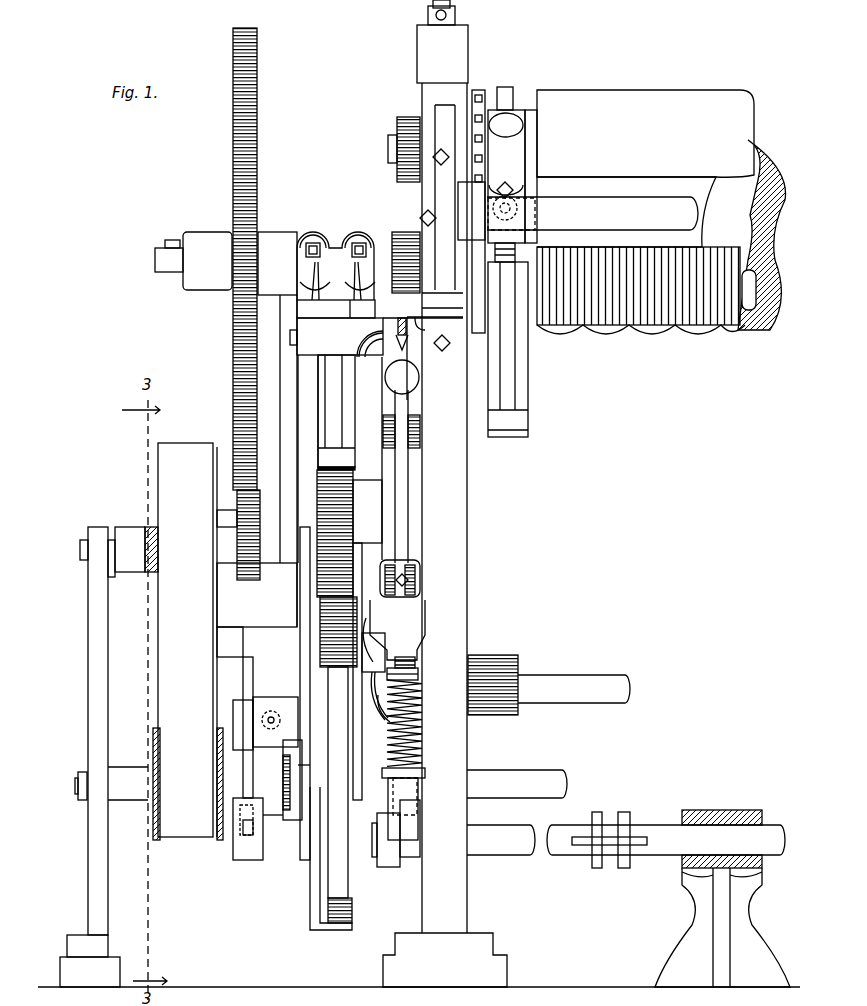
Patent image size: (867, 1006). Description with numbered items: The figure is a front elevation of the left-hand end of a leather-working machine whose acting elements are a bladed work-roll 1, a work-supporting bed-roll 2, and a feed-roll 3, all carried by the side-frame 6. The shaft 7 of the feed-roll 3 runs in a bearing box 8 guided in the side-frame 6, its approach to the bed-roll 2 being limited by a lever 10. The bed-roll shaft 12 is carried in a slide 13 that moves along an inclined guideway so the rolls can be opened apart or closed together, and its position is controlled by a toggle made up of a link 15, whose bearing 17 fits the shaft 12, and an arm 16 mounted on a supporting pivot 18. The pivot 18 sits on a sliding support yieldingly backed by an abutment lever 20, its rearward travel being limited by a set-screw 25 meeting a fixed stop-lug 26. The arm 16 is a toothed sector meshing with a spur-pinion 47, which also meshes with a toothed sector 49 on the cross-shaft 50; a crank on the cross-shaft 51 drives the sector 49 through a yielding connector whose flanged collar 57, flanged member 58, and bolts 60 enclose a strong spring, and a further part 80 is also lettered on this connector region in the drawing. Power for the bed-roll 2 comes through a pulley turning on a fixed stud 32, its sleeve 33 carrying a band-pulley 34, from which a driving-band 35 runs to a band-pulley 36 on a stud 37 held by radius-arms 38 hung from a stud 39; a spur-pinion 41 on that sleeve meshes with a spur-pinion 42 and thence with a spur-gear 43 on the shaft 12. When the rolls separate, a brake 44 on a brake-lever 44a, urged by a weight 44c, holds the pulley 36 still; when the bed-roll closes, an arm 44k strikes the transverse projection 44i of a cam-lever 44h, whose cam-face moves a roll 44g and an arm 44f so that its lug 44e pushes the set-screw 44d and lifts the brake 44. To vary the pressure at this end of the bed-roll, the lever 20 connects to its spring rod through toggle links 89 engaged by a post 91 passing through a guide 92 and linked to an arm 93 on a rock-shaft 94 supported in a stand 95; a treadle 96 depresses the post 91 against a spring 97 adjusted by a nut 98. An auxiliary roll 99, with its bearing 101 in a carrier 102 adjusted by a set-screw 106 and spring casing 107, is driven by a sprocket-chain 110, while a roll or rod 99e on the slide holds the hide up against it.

The work-roll 1 is at (680, 333).
The bed-roll 2 is at (613, 327).
The feed-roll 3 is at (752, 170).
The side-frame 6 is at (467, 600).
The feed-roll shaft 7 is at (388, 148).
The feed-roll bearing box 8 is at (405, 117).
The lever 10 is at (286, 457).
The bed-roll shaft 12 is at (155, 268).
The slide 13 is at (400, 232).
The link 15 is at (330, 275).
The arm 16 is at (323, 400).
The bearing 17 is at (331, 250).
The supporting pivot 18 is at (290, 340).
The abutment lever 20 is at (406, 462).
The set-screw 25 is at (390, 385).
The stop-lug 26 is at (357, 336).
The stud 32 is at (78, 789).
The sleeve 33 is at (133, 800).
The band-pulley 34 is at (156, 840).
The driving-band 35 is at (176, 685).
The band-pulley 36 is at (157, 466).
The stud 37 is at (110, 548).
The radius-arm 38 is at (125, 527).
The stud 39 is at (80, 552).
The spur-pinion 41 is at (258, 580).
The spur-pinion 42 is at (237, 512).
The spur-gear 43 is at (236, 390).
The brake 44 is at (235, 637).
The brake-lever 44a is at (242, 663).
The weight 44c is at (238, 852).
The set-screw 44d is at (271, 712).
The lug 44e is at (355, 727).
The arm 44f is at (297, 618).
The roll 44g is at (275, 772).
The cam-lever 44h is at (288, 840).
The transverse projection 44i is at (338, 932).
The arm 44k is at (355, 915).
The spur-pinion 47 is at (342, 510).
The toothed sector 49 is at (360, 615).
The cross-shaft 50 is at (516, 770).
The cross-shaft 51 is at (555, 676).
The flanged collar 57 is at (380, 717).
The flanged member 58 is at (372, 668).
The bolt 60 is at (373, 618).
The catch 80 is at (380, 694).
The link 89 is at (416, 570).
The post 91 is at (416, 660).
The guide 92 is at (412, 775).
The arm 93 is at (391, 867).
The rock-shaft 94 is at (512, 852).
The stand 95 is at (702, 915).
The treadle 96 is at (636, 838).
The spring 97 is at (425, 730).
The nut 98 is at (420, 681).
The auxiliary roll 99 is at (640, 178).
The roll or rod 99e is at (598, 196).
The bearing 101 is at (530, 200).
The carrier 102 is at (528, 350).
The set-screw 106 is at (512, 212).
The casing 107 is at (512, 122).
The sprocket-chain 110 is at (472, 150).